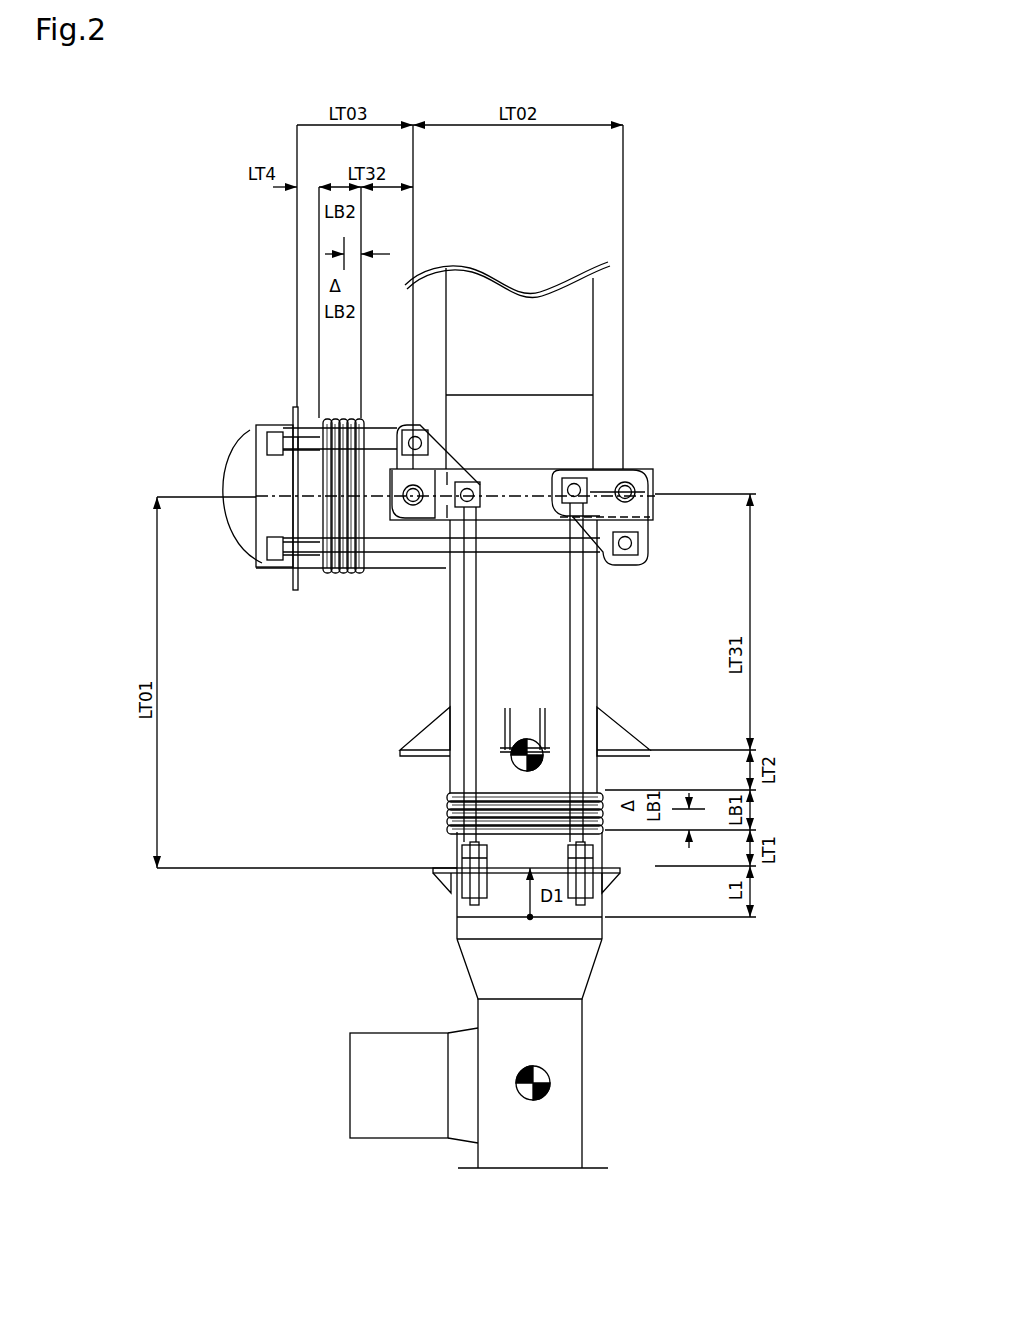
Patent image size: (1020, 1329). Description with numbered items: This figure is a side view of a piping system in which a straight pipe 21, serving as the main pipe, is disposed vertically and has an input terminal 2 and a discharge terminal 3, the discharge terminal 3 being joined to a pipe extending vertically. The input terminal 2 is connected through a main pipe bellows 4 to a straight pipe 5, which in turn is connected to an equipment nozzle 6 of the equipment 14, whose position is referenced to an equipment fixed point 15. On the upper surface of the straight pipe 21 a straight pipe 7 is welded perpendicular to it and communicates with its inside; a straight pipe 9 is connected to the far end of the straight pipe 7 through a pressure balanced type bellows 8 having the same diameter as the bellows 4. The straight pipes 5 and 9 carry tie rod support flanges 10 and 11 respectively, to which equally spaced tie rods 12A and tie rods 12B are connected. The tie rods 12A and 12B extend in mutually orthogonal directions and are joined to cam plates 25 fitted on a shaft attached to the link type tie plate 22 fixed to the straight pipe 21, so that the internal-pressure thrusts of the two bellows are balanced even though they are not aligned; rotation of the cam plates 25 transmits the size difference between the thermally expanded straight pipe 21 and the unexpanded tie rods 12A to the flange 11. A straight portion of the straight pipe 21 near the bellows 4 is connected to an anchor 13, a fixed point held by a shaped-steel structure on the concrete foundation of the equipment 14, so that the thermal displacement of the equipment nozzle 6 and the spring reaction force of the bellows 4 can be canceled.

The input terminal 2 is at (450, 793).
The discharge terminal 3 is at (577, 395).
The bellows 4 is at (447, 813).
The straight pipe 5 is at (507, 893).
The equipment nozzle 6 is at (567, 925).
The straight pipe 7 is at (397, 560).
The pressure balanced type bellows 8 is at (340, 417).
The straight pipe 9 is at (273, 563).
The tie rod support flange 10 is at (440, 872).
The tie rod support flange 11 is at (292, 408).
The tie rod 12A is at (572, 618).
The tie rod 12B is at (263, 570).
The anchor 13 is at (507, 740).
The equipment 14 is at (563, 1138).
The equipment fixed point 15 is at (550, 1083).
The straight pipe 21 is at (545, 670).
The link type tie plate 22 is at (517, 480).
The cam plate 25 is at (453, 455).